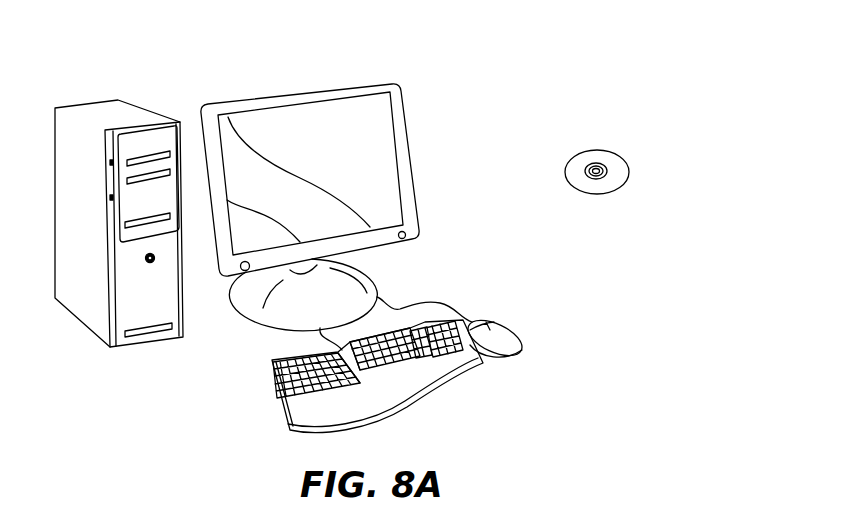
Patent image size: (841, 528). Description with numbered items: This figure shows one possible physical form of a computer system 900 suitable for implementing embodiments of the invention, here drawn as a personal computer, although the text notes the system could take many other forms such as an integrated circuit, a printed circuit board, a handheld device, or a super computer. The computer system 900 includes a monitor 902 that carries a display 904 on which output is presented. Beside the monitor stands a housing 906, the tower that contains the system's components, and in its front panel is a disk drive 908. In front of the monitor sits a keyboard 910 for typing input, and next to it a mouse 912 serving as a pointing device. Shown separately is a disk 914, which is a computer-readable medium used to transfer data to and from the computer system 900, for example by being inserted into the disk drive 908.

The computer system 900 is at (528, 66).
The monitor 902 is at (415, 178).
The display 904 is at (373, 122).
The housing 906 is at (105, 110).
The disk drive 908 is at (162, 217).
The keyboard 910 is at (282, 403).
The mouse 912 is at (520, 328).
The disk 914 is at (615, 150).